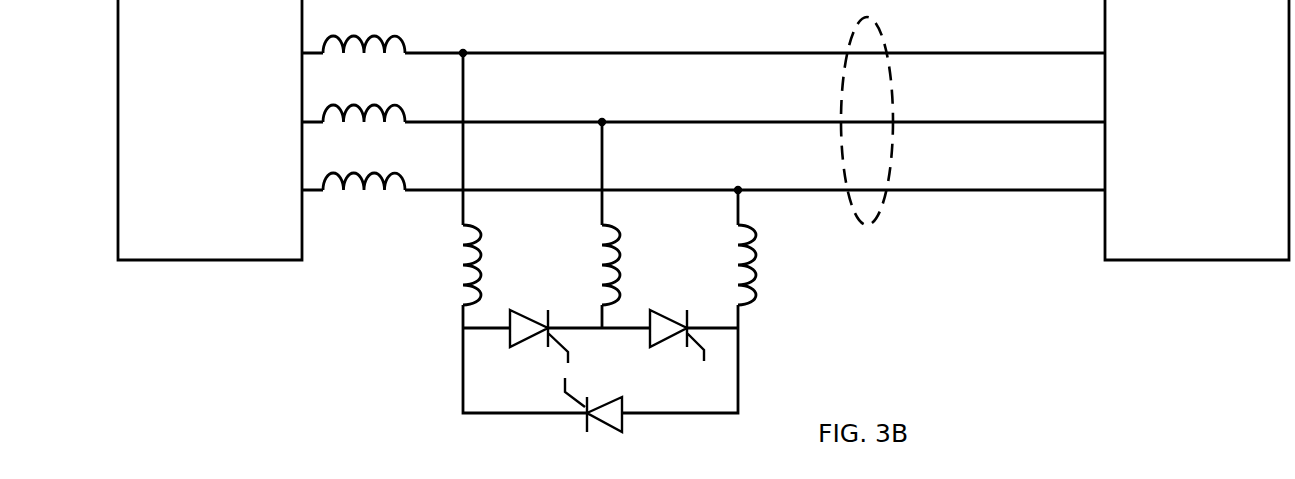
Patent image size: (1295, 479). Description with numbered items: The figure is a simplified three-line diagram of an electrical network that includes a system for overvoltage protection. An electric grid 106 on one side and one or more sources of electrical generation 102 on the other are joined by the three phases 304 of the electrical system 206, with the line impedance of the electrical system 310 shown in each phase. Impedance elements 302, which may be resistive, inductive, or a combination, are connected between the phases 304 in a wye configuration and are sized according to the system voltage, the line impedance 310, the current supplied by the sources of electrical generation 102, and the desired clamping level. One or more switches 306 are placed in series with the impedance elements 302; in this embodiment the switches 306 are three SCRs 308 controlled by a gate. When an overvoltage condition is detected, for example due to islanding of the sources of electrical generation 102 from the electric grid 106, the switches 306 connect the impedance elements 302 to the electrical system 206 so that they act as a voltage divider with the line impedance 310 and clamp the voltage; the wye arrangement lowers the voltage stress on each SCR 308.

The sources of electrical generation 102 is at (1197, 130).
The electric grid 106 is at (210, 130).
The electrical system 206 is at (872, 218).
The impedance elements 302 is at (462, 232).
The phases 304 is at (928, 52).
The switches 306 is at (610, 0).
The SCRs 308 is at (533, 334).
The impedance of the electrical system 310 is at (358, 28).